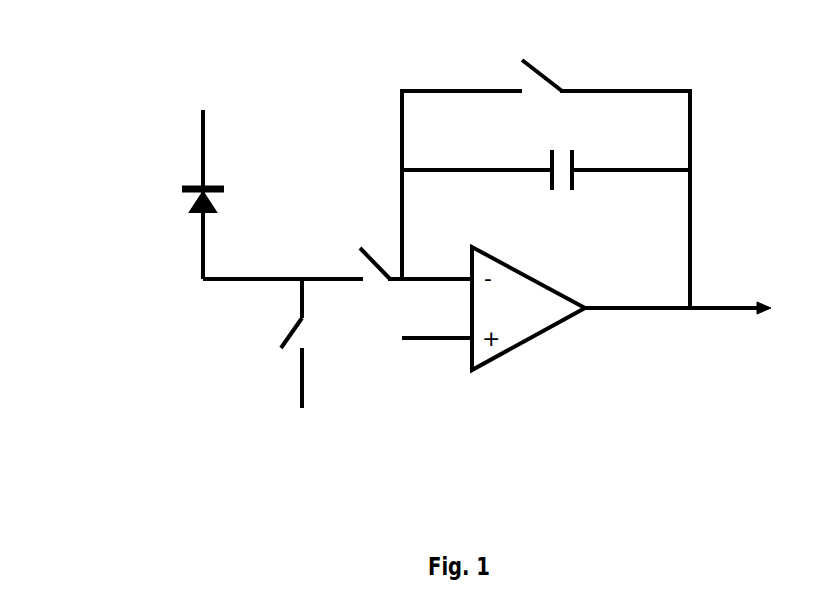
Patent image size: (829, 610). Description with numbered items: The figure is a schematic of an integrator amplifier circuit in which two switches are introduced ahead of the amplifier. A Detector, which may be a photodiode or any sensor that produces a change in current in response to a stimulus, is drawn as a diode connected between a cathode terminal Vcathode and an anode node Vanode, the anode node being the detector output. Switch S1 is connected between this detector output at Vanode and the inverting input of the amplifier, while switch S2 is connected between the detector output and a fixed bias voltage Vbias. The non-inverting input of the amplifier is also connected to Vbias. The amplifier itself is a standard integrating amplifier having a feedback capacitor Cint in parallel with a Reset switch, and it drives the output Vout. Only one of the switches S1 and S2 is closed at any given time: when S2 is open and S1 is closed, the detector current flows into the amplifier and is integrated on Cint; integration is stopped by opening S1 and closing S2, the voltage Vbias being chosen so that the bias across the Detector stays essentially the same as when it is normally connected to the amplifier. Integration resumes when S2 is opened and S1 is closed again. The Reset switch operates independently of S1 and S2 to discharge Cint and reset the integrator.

The detector Detector is at (177, 208).
The cathode voltage terminal Vcathode is at (195, 106).
The anode node Vanode is at (283, 263).
The switch S2 is at (277, 343).
The bias voltage Vbias is at (375, 394).
The switch S1 is at (411, 250).
The Reset switch Reset is at (546, 163).
The integration capacitor Cint is at (546, 188).
The output voltage Vout is at (684, 333).